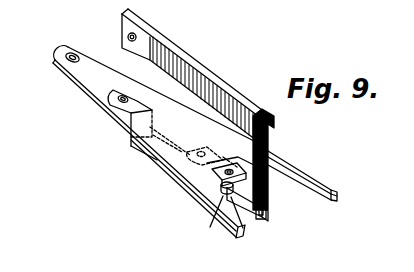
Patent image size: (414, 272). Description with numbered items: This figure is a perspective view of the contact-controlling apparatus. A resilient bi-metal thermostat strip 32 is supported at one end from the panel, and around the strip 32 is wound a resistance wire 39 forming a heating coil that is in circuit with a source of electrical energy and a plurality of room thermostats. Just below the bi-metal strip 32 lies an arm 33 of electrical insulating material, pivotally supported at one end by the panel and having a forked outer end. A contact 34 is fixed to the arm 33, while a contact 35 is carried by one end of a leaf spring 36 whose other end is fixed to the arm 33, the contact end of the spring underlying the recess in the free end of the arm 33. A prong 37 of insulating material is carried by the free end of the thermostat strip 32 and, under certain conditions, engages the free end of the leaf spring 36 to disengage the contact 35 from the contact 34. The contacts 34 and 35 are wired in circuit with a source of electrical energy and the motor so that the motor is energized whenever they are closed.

The bi-metal thermostat strip 32 is at (158, 48).
The arm 33 is at (98, 88).
The contact 34 is at (271, 189).
The contact 35 is at (216, 205).
The leaf spring 36 is at (142, 158).
The prong 37 is at (271, 159).
The resistance wire 39 is at (210, 83).